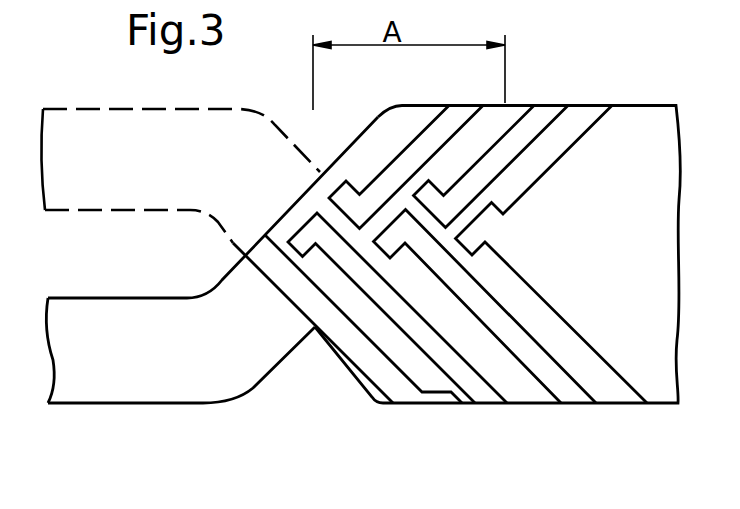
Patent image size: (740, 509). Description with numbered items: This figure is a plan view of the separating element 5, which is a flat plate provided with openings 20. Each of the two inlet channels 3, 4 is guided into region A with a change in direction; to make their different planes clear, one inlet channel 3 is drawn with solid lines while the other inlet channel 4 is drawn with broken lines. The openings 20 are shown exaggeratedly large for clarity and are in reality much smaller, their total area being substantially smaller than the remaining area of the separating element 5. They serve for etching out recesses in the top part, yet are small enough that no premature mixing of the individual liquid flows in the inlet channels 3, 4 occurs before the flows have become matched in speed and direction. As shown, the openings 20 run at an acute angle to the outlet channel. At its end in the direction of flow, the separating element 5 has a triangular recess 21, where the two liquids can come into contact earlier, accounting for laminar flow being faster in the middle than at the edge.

The inlet channel 3 is at (104, 368).
The inlet channel 4 is at (98, 178).
The separating element 5 is at (528, 385).
The openings 20 is at (445, 352).
The triangular recess 21 is at (586, 260).